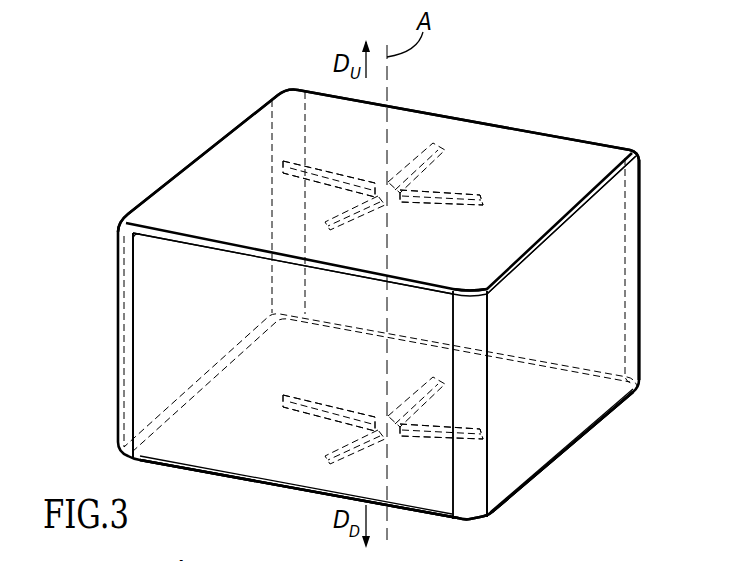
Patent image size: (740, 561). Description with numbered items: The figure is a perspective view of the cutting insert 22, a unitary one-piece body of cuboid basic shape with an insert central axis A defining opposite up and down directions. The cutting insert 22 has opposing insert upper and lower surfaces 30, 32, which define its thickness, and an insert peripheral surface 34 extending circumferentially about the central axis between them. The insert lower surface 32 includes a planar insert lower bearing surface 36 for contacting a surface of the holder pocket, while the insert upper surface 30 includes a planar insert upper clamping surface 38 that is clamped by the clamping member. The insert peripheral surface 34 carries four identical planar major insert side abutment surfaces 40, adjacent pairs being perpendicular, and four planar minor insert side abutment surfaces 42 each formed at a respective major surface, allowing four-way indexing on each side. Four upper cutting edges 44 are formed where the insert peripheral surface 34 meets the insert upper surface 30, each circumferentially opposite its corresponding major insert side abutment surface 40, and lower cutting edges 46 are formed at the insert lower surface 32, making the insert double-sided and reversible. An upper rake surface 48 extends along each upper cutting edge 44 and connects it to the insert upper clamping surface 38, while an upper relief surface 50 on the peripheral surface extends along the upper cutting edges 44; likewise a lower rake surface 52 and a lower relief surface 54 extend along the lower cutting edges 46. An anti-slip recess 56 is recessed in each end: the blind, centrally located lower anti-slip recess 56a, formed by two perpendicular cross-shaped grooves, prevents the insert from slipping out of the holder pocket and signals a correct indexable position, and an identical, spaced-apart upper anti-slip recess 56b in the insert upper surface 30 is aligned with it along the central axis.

The cutting insert 22 is at (575, 97).
The insert upper surface 30 is at (507, 142).
The insert lower surface 32 is at (213, 492).
The insert peripheral surface 34 is at (585, 282).
The insert lower bearing surface 36 is at (252, 500).
The insert upper clamping surface 38 is at (468, 177).
The major insert side abutment surface 40 is at (176, 156).
The minor insert side abutment surface 42 is at (196, 130).
The upper cutting edge 44 is at (162, 182).
The lower cutting edge 46 is at (283, 490).
The upper rake surface 48 is at (218, 192).
The upper relief surface 50 is at (237, 297).
The lower rake surface 52 is at (558, 482).
The lower relief surface 54 is at (297, 477).
The anti-slip recess 56 is at (345, 150).
The lower anti-slip recess 56a is at (383, 417).
The upper anti-slip recess 56b is at (383, 183).